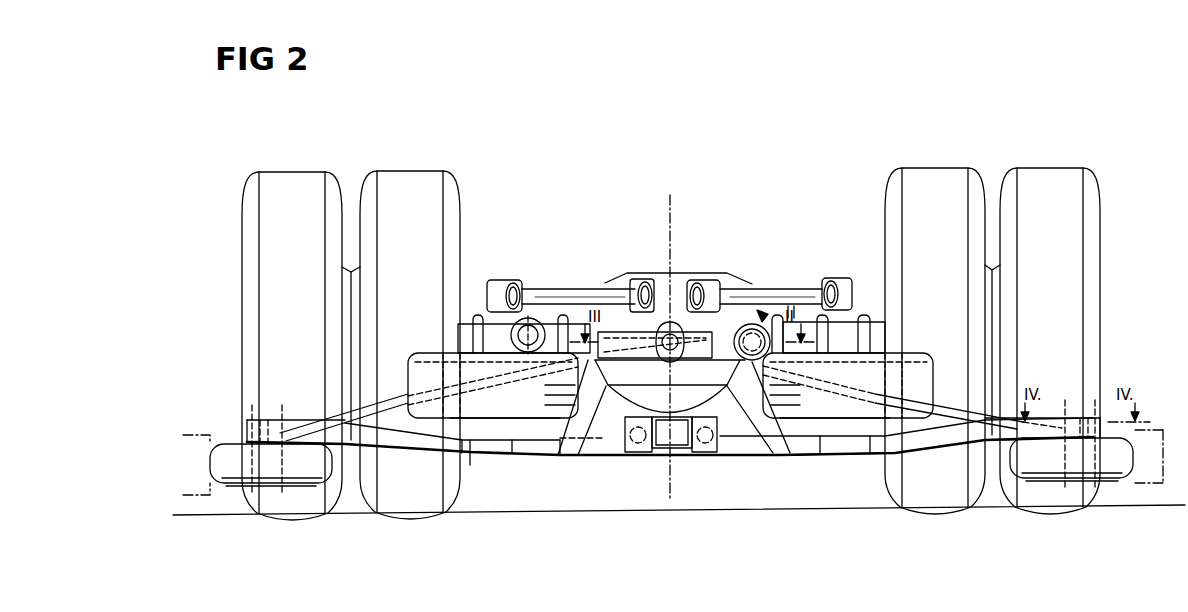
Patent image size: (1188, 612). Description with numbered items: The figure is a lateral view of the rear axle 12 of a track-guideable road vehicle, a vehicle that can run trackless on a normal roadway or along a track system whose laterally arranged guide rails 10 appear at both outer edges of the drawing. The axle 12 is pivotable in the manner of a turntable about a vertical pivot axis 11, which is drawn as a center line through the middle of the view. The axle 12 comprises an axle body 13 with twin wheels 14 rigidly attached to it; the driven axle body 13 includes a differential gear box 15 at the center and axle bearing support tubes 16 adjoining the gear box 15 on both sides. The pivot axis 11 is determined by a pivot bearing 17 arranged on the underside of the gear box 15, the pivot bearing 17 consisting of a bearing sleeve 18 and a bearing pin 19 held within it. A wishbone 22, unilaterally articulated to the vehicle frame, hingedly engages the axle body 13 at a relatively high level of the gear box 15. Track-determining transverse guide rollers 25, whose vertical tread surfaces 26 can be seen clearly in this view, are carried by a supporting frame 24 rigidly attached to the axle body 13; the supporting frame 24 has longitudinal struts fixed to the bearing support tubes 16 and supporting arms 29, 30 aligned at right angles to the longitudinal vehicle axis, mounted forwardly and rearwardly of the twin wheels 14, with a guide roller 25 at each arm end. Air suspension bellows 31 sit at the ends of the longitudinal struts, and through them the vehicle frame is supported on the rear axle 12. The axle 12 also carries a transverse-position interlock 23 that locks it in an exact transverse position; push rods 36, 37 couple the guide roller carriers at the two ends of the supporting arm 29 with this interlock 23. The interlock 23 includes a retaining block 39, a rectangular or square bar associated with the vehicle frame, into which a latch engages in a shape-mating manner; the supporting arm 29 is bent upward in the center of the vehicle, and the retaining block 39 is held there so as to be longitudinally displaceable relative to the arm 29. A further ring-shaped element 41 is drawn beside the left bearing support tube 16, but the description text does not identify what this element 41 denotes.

The guide rails 10 is at (205, 459).
The vertical pivot axis 11 is at (668, 262).
The axle 12 is at (1053, 128).
The axle body 13 is at (760, 292).
The twin wheels 14 is at (275, 236).
The differential gear box 15 is at (660, 282).
The axle bearing support tubes 16 is at (470, 325).
The pivot bearing 17 is at (706, 457).
The bearing sleeve 18 is at (662, 445).
The bearing pin 19 is at (684, 447).
The wishbone 22 is at (715, 286).
The transverse-position interlock 23 is at (637, 362).
The supporting frame 24 is at (508, 462).
The transverse guide rollers 25 is at (230, 470).
The vertical tread surfaces 26 is at (342, 466).
The supporting arm 29 is at (805, 450).
The supporting arm 30 is at (755, 442).
The air suspension bellows 31 is at (560, 408).
The push rod 36 is at (952, 405).
The push rod 37 is at (486, 478).
The retaining block 39 is at (722, 335).
The bushing ring 41 is at (553, 348).